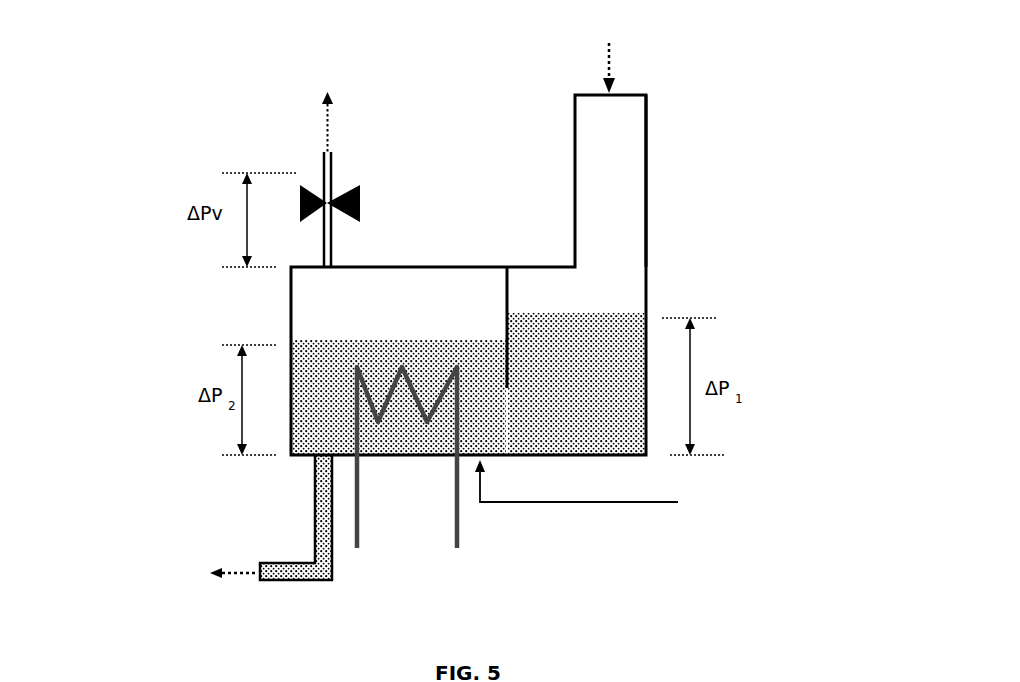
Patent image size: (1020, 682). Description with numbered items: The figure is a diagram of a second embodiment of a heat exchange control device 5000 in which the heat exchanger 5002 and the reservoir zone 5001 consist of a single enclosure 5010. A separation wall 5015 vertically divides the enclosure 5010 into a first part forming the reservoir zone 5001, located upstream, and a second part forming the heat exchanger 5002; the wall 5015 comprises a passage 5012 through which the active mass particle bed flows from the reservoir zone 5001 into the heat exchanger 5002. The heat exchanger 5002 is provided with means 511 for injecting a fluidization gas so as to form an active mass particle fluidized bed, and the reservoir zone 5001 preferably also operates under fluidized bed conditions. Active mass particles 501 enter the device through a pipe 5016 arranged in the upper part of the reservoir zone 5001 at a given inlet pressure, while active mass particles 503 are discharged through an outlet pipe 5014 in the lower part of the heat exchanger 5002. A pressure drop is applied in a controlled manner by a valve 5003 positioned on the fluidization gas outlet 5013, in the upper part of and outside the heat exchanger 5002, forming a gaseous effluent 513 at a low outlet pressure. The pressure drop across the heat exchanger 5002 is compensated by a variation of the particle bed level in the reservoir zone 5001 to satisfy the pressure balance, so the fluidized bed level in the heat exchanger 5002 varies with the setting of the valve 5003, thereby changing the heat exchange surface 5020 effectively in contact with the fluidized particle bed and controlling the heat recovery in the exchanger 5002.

The heat exchange control device 5000 is at (175, 108).
The active mass particles 501 is at (610, 62).
The gaseous effluent 513 is at (335, 108).
The valve 5003 is at (352, 187).
The fluidization gas outlet 5013 is at (330, 252).
The separation wall 5015 is at (483, 282).
The pipe 5016 is at (646, 208).
The reservoir zone 5001 is at (622, 290).
The heat exchanger 5002 is at (325, 323).
The enclosure 5010 is at (290, 288).
The outlet pipe 5014 is at (317, 490).
The active mass particles 503 is at (235, 572).
The heat exchange surface 5020 is at (378, 455).
The passage 5012 is at (538, 440).
The fluidization gas injection means 511 is at (537, 503).